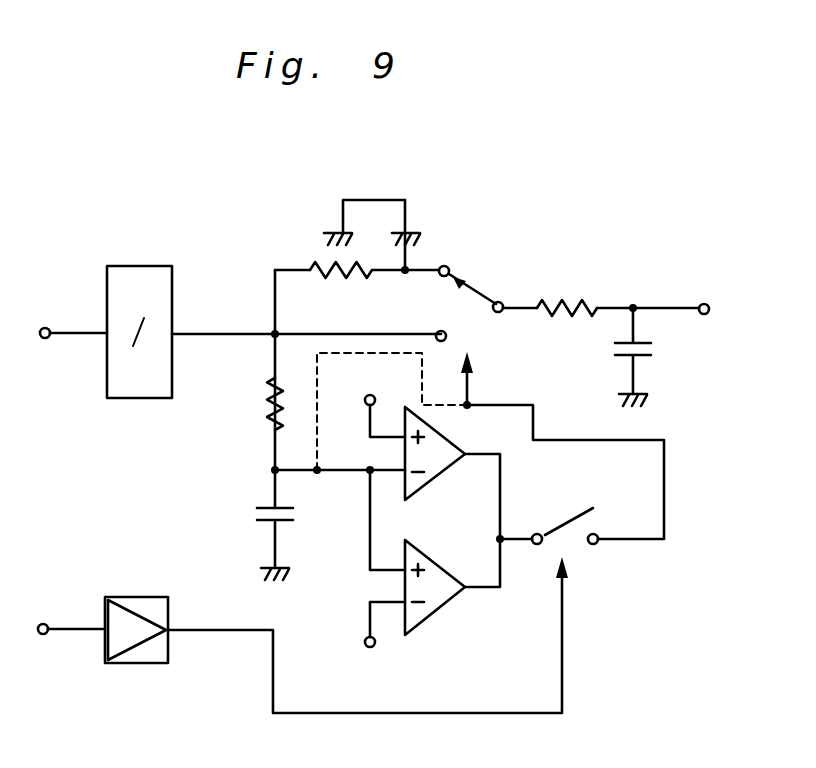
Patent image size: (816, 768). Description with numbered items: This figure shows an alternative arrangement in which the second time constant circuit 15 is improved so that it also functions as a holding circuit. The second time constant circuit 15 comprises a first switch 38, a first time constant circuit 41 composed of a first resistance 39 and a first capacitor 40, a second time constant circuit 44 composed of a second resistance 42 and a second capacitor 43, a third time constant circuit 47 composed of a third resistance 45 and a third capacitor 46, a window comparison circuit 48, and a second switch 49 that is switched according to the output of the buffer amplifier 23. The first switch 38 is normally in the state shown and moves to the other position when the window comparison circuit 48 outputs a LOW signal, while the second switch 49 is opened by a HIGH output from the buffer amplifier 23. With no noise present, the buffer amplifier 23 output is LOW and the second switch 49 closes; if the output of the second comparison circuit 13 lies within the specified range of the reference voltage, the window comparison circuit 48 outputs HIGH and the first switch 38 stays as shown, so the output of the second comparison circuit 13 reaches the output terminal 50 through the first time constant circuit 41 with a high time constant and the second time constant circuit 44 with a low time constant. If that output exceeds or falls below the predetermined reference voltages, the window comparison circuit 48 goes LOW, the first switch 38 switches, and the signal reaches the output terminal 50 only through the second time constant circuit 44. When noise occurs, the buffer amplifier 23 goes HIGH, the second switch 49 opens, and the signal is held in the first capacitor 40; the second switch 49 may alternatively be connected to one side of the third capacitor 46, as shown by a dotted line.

The second comparison circuit 13 is at (139, 265).
The second time constant circuit 15 is at (553, 257).
The buffer amplifier 23 is at (137, 596).
The first switch 38 is at (476, 288).
The first resistance 39 is at (338, 283).
The first capacitor 40 is at (417, 238).
The first time constant circuit 41 is at (311, 238).
The second resistance 42 is at (568, 318).
The second capacitor 43 is at (646, 357).
The second time constant circuit 44 is at (649, 324).
The third resistance 45 is at (268, 402).
The third capacitor 46 is at (284, 522).
The third time constant circuit 47 is at (247, 470).
The window comparison circuit 48 is at (474, 533).
The second switch 49 is at (565, 528).
The output terminal 50 is at (705, 304).